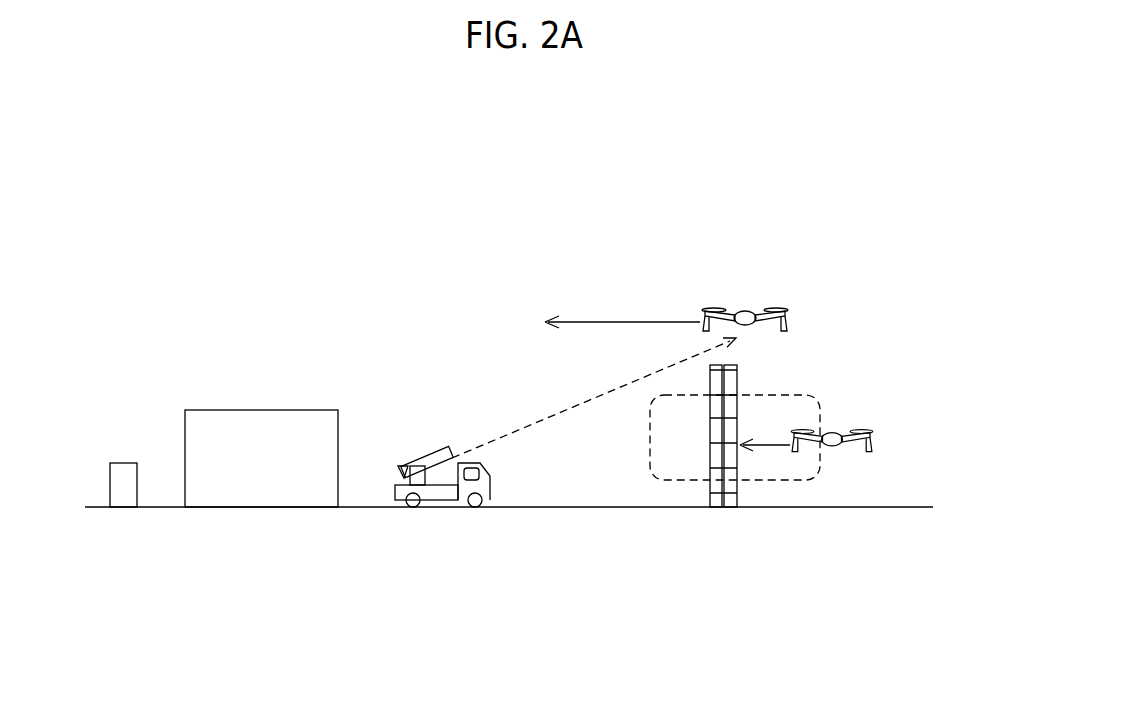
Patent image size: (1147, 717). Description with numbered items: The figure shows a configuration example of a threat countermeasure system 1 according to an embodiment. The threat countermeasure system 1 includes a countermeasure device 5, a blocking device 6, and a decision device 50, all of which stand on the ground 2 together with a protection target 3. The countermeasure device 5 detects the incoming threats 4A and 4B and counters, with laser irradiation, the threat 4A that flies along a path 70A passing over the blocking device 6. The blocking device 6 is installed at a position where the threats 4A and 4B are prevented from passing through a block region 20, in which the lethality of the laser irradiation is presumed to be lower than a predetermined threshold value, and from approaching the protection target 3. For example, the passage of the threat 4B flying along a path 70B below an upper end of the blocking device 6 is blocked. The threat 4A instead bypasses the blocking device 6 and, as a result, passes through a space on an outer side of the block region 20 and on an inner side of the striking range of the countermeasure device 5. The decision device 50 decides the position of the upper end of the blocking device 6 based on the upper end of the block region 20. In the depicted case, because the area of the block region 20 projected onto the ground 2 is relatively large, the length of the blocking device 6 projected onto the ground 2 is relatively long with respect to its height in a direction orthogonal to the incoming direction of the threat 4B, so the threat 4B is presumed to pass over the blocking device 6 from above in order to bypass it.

The threat countermeasure system 1 is at (767, 157).
The ground 2 is at (582, 508).
The protection target 3 is at (278, 509).
The threat 4A is at (784, 322).
The threat 4B is at (866, 433).
The countermeasure device 5 is at (447, 507).
The blocking device 6 is at (710, 508).
The block region 20 is at (812, 484).
The decision device 50 is at (119, 509).
The path 70A is at (636, 321).
The path 70B is at (773, 443).